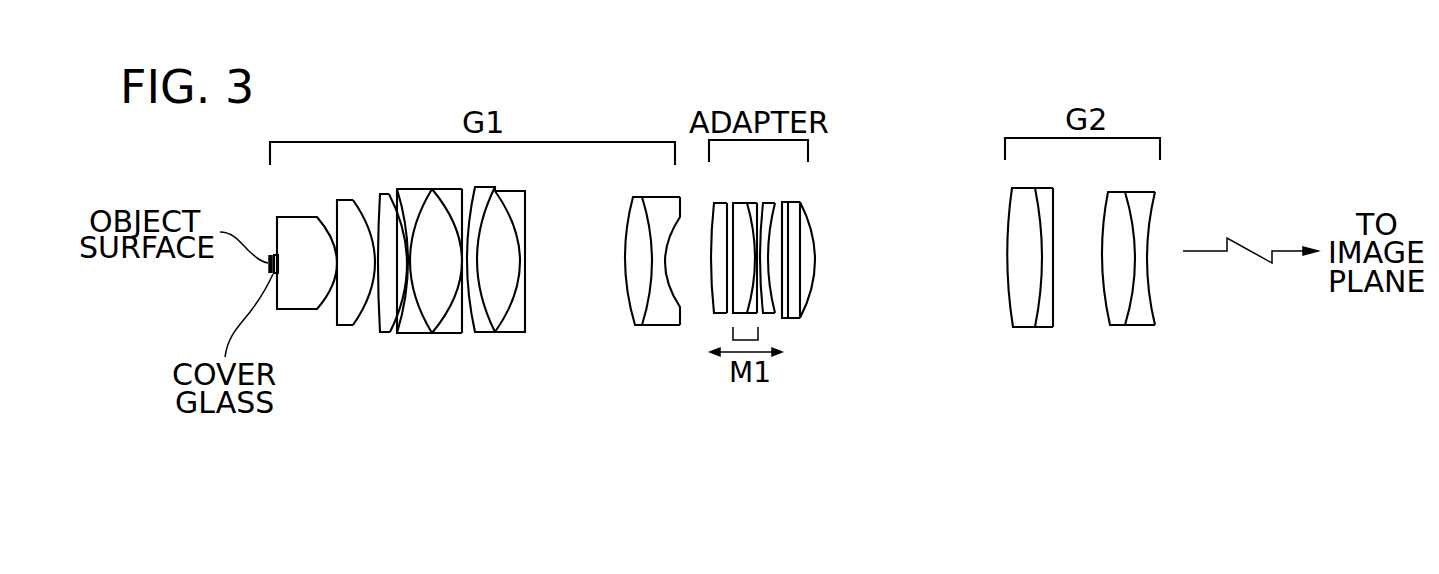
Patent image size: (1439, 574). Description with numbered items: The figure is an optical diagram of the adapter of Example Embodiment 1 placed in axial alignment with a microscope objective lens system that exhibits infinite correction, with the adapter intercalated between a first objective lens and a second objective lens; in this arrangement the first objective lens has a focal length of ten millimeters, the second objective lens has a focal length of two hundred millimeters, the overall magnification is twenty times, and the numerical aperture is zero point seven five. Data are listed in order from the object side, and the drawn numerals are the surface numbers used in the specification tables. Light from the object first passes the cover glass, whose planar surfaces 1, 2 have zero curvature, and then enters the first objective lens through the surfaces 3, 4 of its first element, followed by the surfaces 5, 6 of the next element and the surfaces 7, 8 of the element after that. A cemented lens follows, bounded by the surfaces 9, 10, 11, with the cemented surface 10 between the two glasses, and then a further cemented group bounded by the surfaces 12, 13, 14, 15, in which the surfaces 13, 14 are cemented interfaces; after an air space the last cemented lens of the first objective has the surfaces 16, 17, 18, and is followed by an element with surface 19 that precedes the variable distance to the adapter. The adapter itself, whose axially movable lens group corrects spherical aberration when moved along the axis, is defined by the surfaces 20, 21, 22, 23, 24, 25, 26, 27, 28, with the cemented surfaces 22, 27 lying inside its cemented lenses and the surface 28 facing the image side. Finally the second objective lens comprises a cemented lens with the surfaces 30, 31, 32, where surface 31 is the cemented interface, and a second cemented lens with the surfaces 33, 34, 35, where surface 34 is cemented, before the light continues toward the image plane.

The cover glass surface 1 is at (268, 273).
The cover glass surface 2 is at (275, 275).
The lens surface 3 is at (280, 268).
The lens surface 4 is at (330, 312).
The lens surface 5 is at (358, 318).
The lens surface 6 is at (380, 318).
The lens surface 7 is at (381, 326).
The lens surface 8 is at (400, 320).
The lens surface 9 is at (403, 326).
The lens surface 10 is at (427, 328).
The lens surface 11 is at (446, 325).
The lens surface 12 is at (474, 328).
The lens surface 13 is at (487, 330).
The lens surface 14 is at (520, 330).
The lens surface 15 is at (526, 305).
The lens surface 16 is at (633, 307).
The lens surface 17 is at (650, 322).
The lens surface 18 is at (668, 318).
The lens surface 19 is at (712, 308).
The adapter lens surface 20 is at (718, 308).
The adapter lens surface 21 is at (740, 313).
The adapter lens surface 22 is at (750, 210).
The adapter lens surface 23 is at (758, 312).
The adapter lens surface 24 is at (773, 207).
The adapter lens surface 25 is at (782, 300).
The adapter lens surface 26 is at (785, 282).
The adapter lens surface 27 is at (795, 230).
The adapter lens surface 28 is at (813, 248).
The lens surface 30 is at (1007, 312).
The lens surface 31 is at (1034, 320).
The lens surface 32 is at (1053, 308).
The lens surface 33 is at (1105, 313).
The lens surface 34 is at (1127, 312).
The lens surface 35 is at (1153, 310).